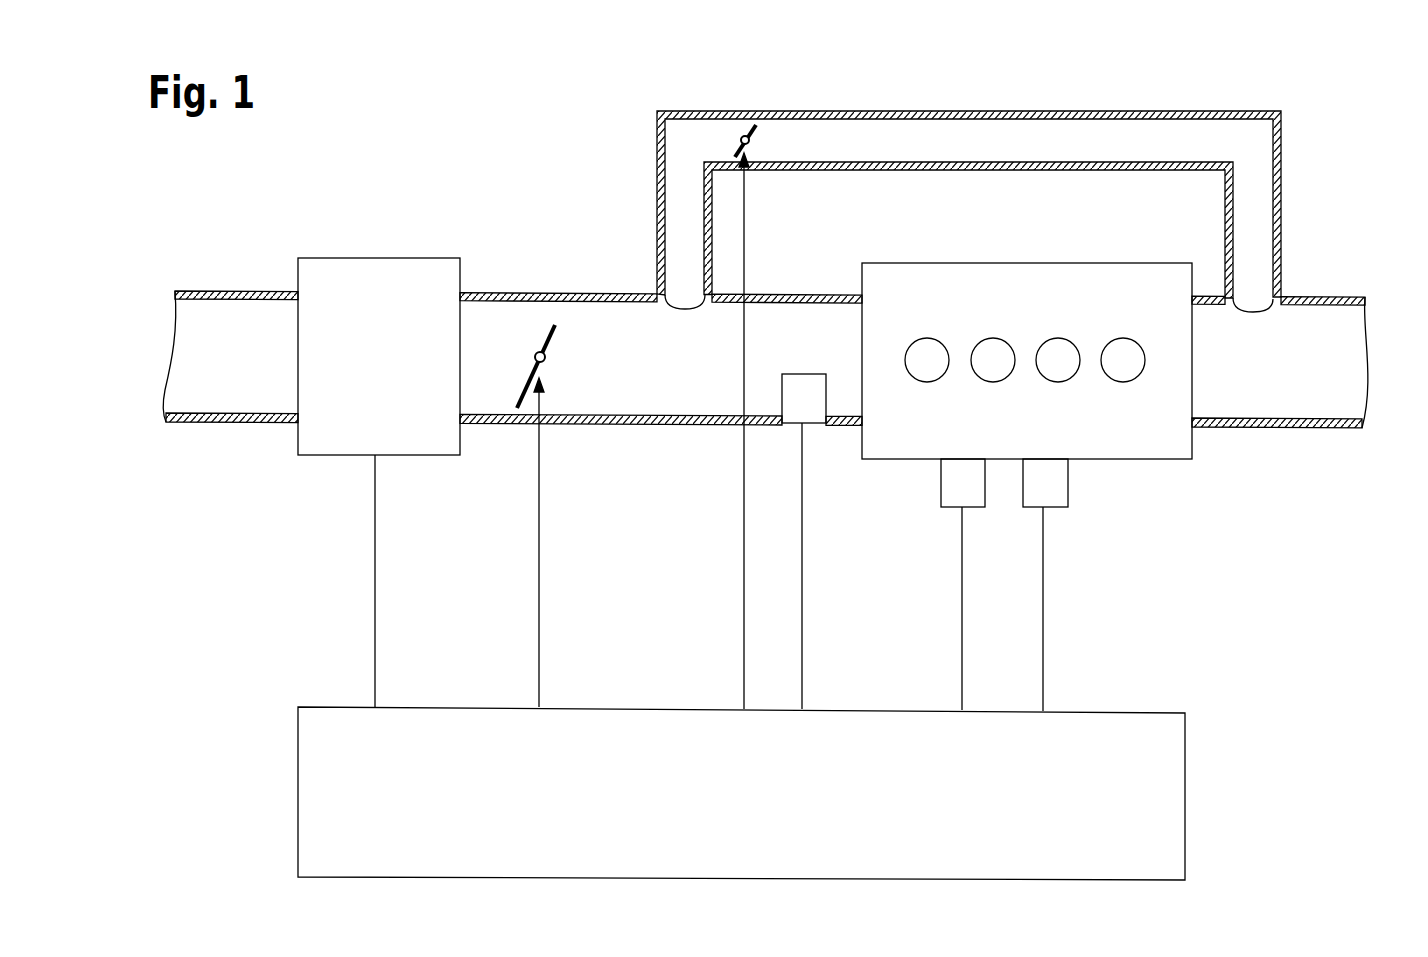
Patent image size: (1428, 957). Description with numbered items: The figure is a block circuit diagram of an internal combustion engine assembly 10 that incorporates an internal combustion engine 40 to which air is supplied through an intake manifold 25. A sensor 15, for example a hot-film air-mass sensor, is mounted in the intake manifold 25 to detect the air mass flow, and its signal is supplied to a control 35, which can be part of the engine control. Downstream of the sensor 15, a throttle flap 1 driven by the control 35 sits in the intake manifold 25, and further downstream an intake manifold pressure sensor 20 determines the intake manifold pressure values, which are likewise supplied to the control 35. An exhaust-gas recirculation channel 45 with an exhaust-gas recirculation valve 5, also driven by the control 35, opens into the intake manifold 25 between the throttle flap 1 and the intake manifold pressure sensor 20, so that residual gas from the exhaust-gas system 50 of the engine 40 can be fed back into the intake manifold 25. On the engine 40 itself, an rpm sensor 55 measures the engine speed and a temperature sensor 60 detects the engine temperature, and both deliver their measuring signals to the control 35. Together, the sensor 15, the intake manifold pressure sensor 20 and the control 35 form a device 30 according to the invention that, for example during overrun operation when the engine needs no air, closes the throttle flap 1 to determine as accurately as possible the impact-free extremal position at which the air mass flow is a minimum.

The throttle flap 1 is at (550, 323).
The exhaust-gas recirculation valve 5 is at (752, 120).
The internal combustion engine assembly 10 is at (1170, 503).
The sensor 15 is at (383, 278).
The intake manifold pressure sensor 20 is at (810, 400).
The intake manifold 25 is at (633, 383).
The device 30 is at (328, 591).
The control 35 is at (1157, 797).
The internal combustion engine 40 is at (1033, 287).
The exhaust-gas recirculation channel 45 is at (675, 207).
The exhaust-gas system 50 is at (1322, 332).
The rpm sensor 55 is at (968, 492).
The temperature sensor 60 is at (1050, 490).